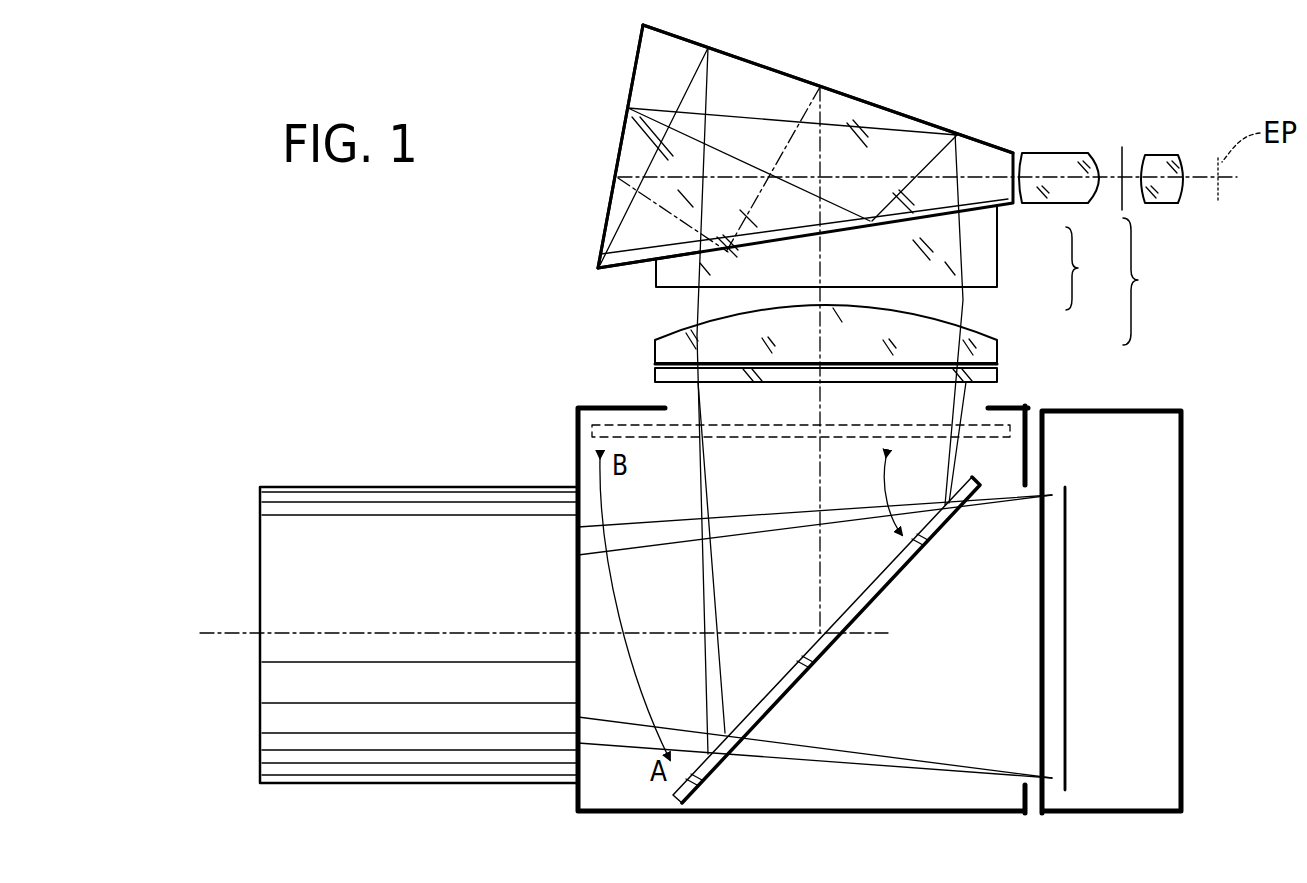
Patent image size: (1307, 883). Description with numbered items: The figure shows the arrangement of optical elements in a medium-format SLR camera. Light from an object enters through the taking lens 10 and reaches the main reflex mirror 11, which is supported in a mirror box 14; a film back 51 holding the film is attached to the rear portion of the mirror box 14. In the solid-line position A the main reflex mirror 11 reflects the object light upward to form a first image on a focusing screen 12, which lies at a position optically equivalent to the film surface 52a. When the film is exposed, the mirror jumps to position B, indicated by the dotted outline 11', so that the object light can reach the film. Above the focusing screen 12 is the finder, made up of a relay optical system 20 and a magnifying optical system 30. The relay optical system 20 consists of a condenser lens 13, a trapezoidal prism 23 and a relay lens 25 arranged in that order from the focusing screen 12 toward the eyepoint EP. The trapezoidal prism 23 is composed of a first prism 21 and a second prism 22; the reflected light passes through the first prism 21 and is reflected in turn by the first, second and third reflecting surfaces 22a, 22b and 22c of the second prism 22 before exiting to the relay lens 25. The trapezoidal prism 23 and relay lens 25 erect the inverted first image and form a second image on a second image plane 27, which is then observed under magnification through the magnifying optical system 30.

The taking lens 10 is at (392, 515).
The main reflex mirror 11 is at (826, 640).
The retracted position of beam splitter 11' is at (801, 462).
The focusing screen 12 is at (997, 376).
The condenser lens 13 is at (988, 352).
The mirror box 14 is at (843, 811).
The relay optical system 20 is at (1146, 281).
The first prism 21 is at (1000, 279).
The second prism 22 is at (1003, 191).
The first reflecting surface 22a is at (860, 100).
The second reflecting surface 22b is at (623, 265).
The third reflecting surface 22c is at (621, 140).
The trapezoidal prism 23 is at (1089, 268).
The relay lens 25 is at (1085, 188).
The second image plane 27 is at (1122, 147).
The magnifying optical system 30 is at (1163, 155).
The film back 51 is at (1164, 613).
The film surface 52a is at (1066, 515).